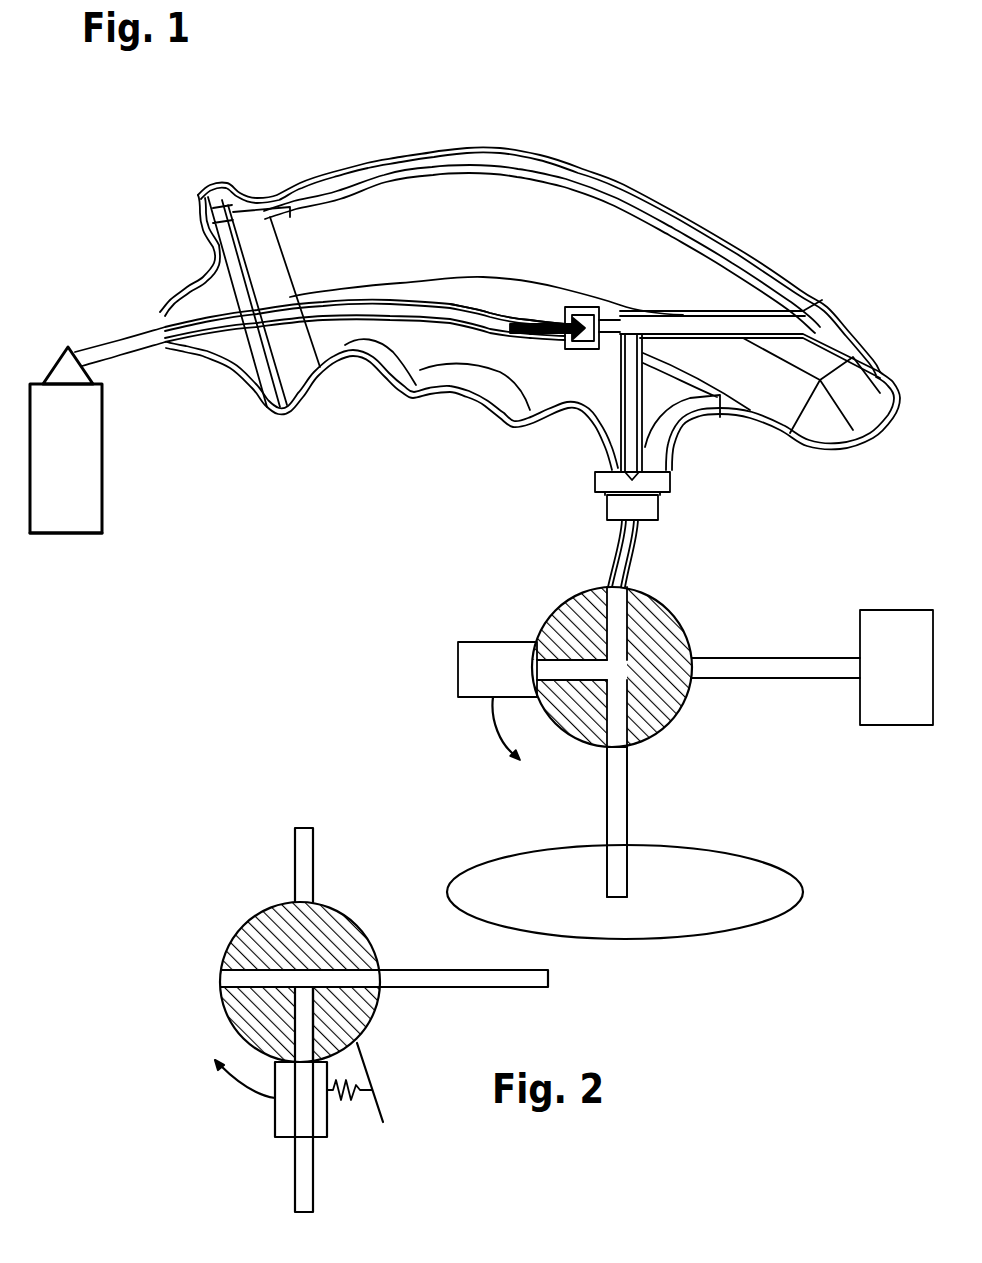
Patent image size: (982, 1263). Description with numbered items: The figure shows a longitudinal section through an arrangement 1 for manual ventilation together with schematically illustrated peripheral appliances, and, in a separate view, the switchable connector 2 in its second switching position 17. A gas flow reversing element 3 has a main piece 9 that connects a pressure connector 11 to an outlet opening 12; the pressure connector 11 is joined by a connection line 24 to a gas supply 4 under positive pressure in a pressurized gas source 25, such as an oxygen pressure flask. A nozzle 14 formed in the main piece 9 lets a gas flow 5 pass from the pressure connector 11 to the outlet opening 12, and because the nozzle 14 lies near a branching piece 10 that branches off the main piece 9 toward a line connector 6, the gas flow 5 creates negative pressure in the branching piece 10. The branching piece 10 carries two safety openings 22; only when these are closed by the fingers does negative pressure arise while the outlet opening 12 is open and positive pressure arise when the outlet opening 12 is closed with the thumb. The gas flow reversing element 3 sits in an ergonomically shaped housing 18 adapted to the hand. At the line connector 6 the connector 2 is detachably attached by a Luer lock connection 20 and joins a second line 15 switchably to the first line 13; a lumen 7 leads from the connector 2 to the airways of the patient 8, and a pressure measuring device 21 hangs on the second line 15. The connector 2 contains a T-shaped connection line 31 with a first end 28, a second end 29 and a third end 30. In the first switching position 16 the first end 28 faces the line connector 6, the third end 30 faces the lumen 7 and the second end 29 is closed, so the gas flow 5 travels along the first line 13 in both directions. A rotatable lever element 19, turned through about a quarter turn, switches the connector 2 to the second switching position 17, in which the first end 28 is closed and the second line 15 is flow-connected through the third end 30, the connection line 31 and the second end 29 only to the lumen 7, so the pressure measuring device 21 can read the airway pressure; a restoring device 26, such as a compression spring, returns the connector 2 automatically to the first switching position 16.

In FIG. 1, the arrangement 1 is at (388, 108).
In FIG. 1, the switchable connector 2 is at (605, 596).
In FIG. 2, the switchable connector 2 is at (252, 927).
In FIG. 1, the gas flow reversing element 3 is at (667, 286).
In FIG. 1, the gas supply 4 is at (77, 470).
In FIG. 1, the gas flow 5 is at (523, 328).
In FIG. 1, the line connector 6 is at (610, 500).
In FIG. 1, the lumen 7 is at (613, 817).
In FIG. 2, the lumen 7 is at (303, 1180).
In FIG. 1, the patient 8 is at (710, 890).
In FIG. 1, the main piece 9 is at (758, 322).
In FIG. 1, the branching piece 10 is at (717, 437).
In FIG. 1, the pressure connector 11 is at (566, 307).
In FIG. 1, the outlet opening 12 is at (840, 323).
In FIG. 1, the first line 13 is at (633, 370).
In FIG. 2, the first line 13 is at (307, 860).
In FIG. 1, the nozzle 14 is at (620, 316).
In FIG. 1, the second line 15 is at (777, 658).
In FIG. 2, the second line 15 is at (387, 977).
In FIG. 1, the first switching position 16 is at (460, 712).
In FIG. 2, the second switching position 17 is at (190, 1020).
In FIG. 1, the housing 18 is at (633, 183).
In FIG. 1, the lever element 19 is at (465, 660).
In FIG. 2, the lever element 19 is at (278, 1123).
In FIG. 1, the connection 20 is at (643, 510).
In FIG. 1, the pressure measuring device 21 is at (893, 617).
In FIG. 1, the safety openings 22 is at (595, 480).
In FIG. 1, the connection line 24 is at (127, 335).
In FIG. 1, the pressurized gas source 25 is at (73, 523).
In FIG. 2, the restoring device 26 is at (362, 1093).
In FIG. 1, the first end 28 is at (612, 590).
In FIG. 2, the first end 28 is at (235, 975).
In FIG. 1, the second end 29 is at (545, 670).
In FIG. 2, the second end 29 is at (305, 1053).
In FIG. 1, the third end 30 is at (615, 740).
In FIG. 2, the third end 30 is at (362, 943).
In FIG. 1, the T-shaped connection line 31 is at (610, 667).
In FIG. 2, the T-shaped connection line 31 is at (300, 977).